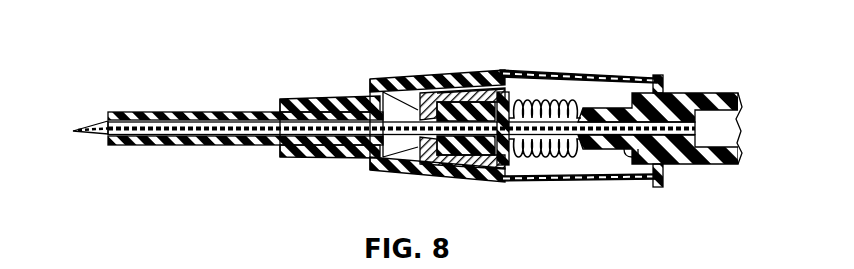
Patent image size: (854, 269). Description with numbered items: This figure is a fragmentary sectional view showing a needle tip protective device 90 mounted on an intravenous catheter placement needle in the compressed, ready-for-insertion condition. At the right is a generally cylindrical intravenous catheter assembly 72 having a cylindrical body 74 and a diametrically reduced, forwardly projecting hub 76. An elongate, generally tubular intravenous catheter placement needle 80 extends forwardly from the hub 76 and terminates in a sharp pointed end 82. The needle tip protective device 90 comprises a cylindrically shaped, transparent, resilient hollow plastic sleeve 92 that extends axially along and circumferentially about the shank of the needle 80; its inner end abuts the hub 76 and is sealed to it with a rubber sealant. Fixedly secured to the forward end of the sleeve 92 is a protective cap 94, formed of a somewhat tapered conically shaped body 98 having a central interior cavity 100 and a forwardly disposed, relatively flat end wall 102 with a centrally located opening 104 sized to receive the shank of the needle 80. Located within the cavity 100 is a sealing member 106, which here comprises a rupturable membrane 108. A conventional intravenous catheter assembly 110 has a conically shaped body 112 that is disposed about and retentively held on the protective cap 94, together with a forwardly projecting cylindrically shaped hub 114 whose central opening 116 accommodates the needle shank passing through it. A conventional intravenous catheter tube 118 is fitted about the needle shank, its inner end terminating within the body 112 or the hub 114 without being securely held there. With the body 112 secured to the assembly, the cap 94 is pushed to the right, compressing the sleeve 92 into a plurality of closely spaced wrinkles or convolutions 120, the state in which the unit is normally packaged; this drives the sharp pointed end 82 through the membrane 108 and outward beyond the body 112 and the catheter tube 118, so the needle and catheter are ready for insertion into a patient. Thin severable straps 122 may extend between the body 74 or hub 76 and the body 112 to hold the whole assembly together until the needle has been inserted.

The intravenous catheter assembly 72 is at (630, 88).
The cylindrical body 74 is at (643, 181).
The hub 76 is at (622, 178).
The intravenous catheter placement needle 80 is at (183, 146).
The sharp pointed end 82 is at (72, 128).
The needle tip protective device 90 is at (525, 95).
The hollow plastic sleeve 92 is at (553, 93).
The protective cap 94 is at (460, 88).
The conically shaped body 98 is at (468, 181).
The central interior cavity 100 is at (467, 88).
The flat end wall 102 is at (413, 181).
The centrally located opening 104 is at (368, 85).
The sealing member 106 is at (423, 88).
The rupturable membrane 108 is at (490, 181).
The intravenous catheter assembly 110 is at (383, 123).
The conically shaped body 112 is at (393, 79).
The hub 114 is at (292, 100).
The central opening 116 is at (254, 146).
The intravenous catheter tube 118 is at (137, 112).
The convolutions 120 is at (570, 174).
The thin straps 122 is at (600, 75).